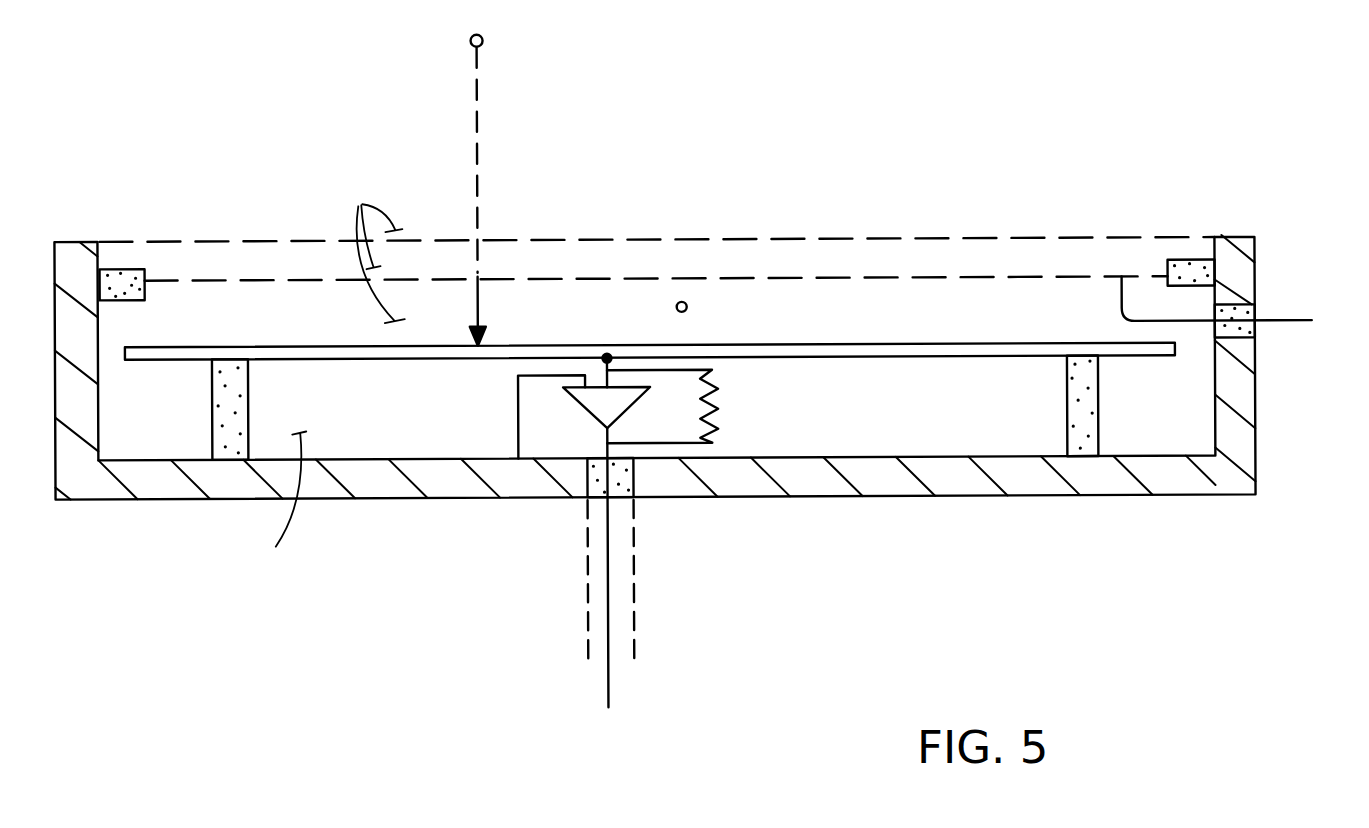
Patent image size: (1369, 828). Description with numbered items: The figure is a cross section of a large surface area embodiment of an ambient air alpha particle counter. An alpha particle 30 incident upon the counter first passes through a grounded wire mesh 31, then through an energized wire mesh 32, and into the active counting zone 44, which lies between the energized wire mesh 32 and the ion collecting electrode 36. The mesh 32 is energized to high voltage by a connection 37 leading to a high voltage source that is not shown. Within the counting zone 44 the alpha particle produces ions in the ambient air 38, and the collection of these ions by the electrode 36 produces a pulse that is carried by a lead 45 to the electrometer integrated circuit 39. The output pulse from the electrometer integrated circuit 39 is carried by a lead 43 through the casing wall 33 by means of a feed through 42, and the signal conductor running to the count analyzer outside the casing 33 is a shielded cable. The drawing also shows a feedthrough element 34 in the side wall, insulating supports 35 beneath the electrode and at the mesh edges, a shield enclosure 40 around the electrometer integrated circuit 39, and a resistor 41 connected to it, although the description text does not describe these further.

The alpha particle 30 is at (485, 40).
The grounded wire mesh 31 is at (860, 238).
The energized wire mesh 32 is at (943, 278).
The casing wall 33 is at (1256, 478).
The high voltage feedthrough insulator 34 is at (1252, 317).
The insulating supports 35 is at (1195, 262).
The ion collecting electrode 36 is at (565, 343).
The connection 37 is at (1268, 327).
The ambient air 38 is at (330, 375).
The electrometer integrated circuit 39 is at (586, 407).
The amplifier shield housing 40 is at (518, 414).
The load resistor 41 is at (718, 410).
The feed through 42 is at (633, 468).
The lead 43 is at (609, 595).
The active counting zone 44 is at (688, 307).
The lead 45 is at (603, 358).